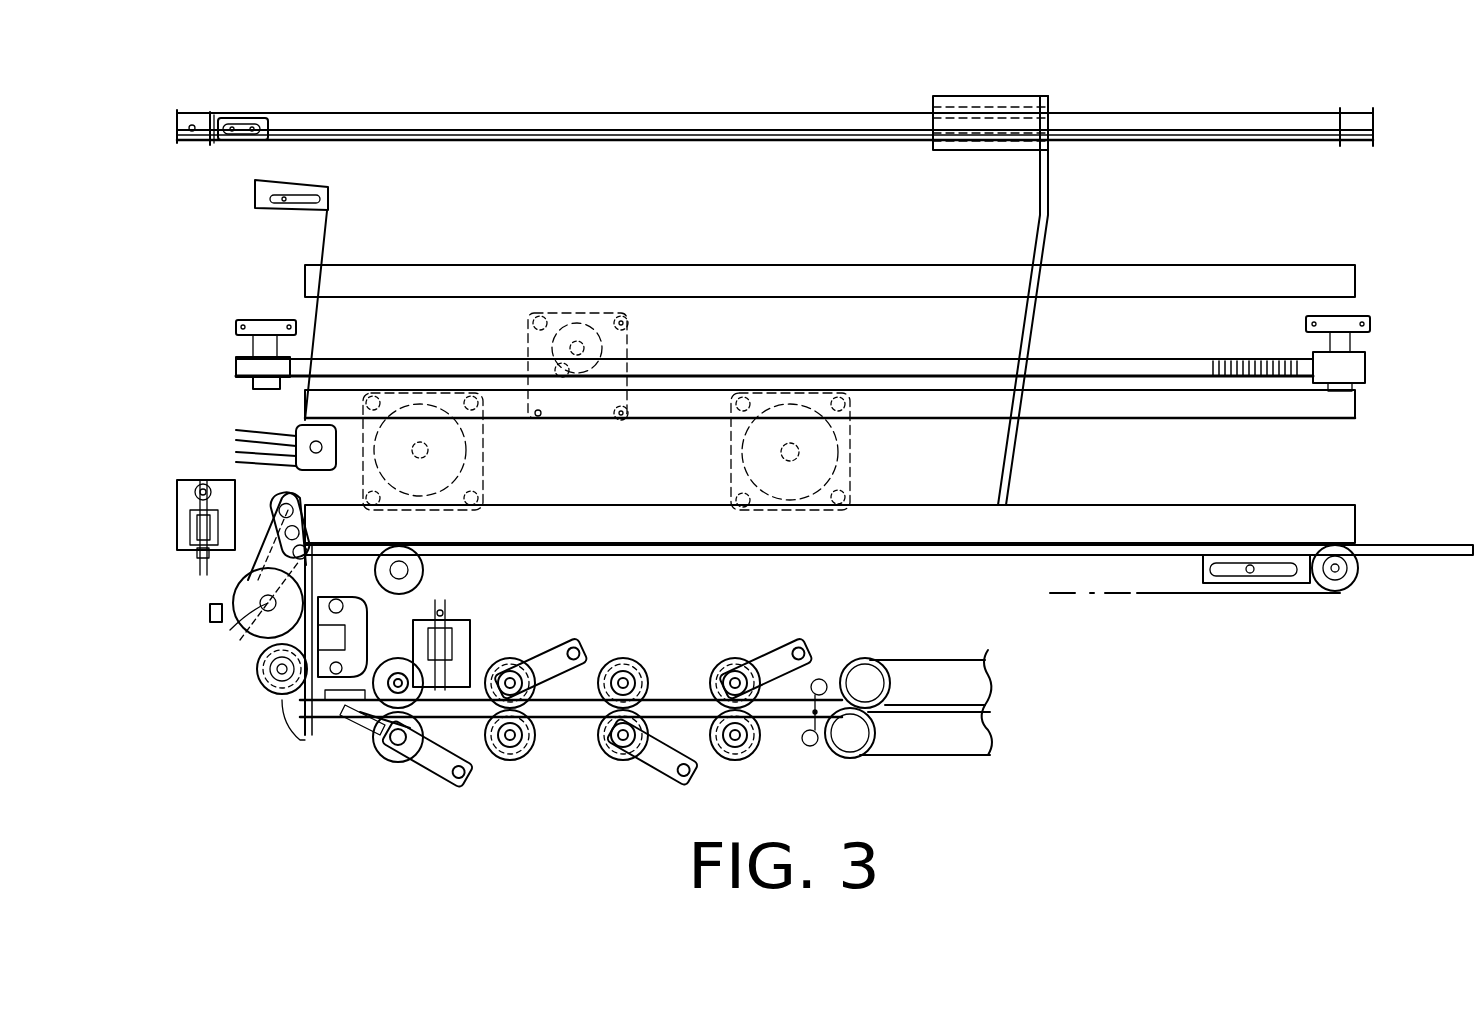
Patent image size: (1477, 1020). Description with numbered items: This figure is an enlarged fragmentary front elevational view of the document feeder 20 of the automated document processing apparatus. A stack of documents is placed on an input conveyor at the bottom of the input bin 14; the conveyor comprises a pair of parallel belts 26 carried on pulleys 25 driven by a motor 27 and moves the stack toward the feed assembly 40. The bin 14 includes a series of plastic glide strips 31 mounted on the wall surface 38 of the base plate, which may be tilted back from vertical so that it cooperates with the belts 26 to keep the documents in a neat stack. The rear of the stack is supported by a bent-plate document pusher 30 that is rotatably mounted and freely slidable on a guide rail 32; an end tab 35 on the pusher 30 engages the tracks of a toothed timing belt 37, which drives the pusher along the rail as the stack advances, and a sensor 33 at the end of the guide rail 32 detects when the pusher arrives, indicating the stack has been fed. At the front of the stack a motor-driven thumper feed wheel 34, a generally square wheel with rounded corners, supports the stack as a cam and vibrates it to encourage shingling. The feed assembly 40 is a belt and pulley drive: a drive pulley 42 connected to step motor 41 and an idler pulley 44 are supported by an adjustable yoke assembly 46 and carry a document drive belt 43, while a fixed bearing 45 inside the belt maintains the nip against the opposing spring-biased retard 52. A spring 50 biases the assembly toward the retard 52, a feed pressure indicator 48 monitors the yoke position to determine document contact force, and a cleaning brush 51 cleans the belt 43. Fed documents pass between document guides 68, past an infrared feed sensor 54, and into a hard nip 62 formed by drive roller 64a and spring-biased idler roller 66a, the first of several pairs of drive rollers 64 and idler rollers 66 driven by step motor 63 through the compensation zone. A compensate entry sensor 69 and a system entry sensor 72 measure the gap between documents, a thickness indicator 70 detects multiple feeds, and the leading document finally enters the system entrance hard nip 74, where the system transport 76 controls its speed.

The input bin 14 is at (866, 375).
The document feeder 20 is at (838, 98).
The pulleys 25 is at (1340, 590).
The parallel belts 26 is at (1185, 593).
The motor 27 is at (590, 345).
The document pusher 30 is at (1045, 185).
The glide strips 31 is at (1337, 280).
The guide rail 32 is at (607, 120).
The sensor 33 is at (240, 118).
The thumper feed wheel 34 is at (300, 422).
The end tab 35 is at (1030, 365).
The timing belt 37 is at (1257, 372).
The wall surface 38 is at (858, 341).
The feed assembly 40 is at (250, 640).
The step motor 41 is at (446, 446).
The drive pulley 42 is at (262, 642).
The document drive belt 43 is at (252, 500).
The idler pulley 44 is at (288, 502).
The fixed bearing 45 is at (305, 540).
The yoke assembly 46 is at (205, 582).
The feed pressure indicator 48 is at (183, 508).
The spring 50 is at (200, 557).
The cleaning brush 51 is at (210, 615).
The retard 52 is at (372, 556).
The feed sensor 54 is at (270, 690).
The nip 62 is at (325, 705).
The step motor 63 is at (818, 445).
The drive rollers 64 is at (397, 665).
The drive roller 64a is at (275, 705).
The idler rollers 66 is at (520, 655).
The idler roller 66a is at (362, 720).
The document guides 68 is at (338, 705).
The compensate entry sensor 69 is at (375, 738).
The thickness indicator 70 is at (470, 640).
The system entry sensor 72 is at (822, 678).
The system entrance hard nip 74 is at (885, 708).
The system transport 76 is at (945, 758).